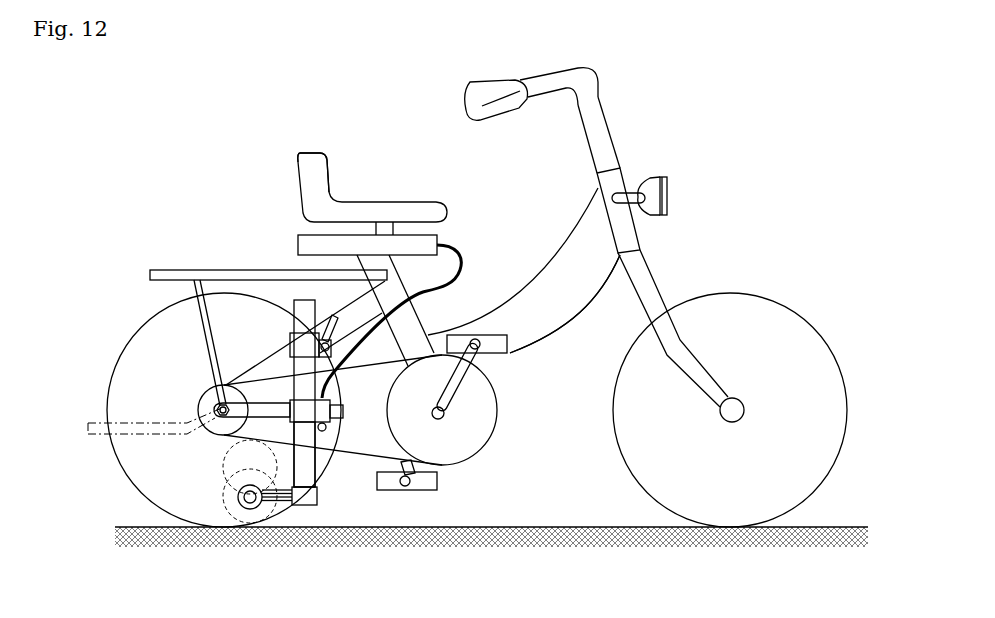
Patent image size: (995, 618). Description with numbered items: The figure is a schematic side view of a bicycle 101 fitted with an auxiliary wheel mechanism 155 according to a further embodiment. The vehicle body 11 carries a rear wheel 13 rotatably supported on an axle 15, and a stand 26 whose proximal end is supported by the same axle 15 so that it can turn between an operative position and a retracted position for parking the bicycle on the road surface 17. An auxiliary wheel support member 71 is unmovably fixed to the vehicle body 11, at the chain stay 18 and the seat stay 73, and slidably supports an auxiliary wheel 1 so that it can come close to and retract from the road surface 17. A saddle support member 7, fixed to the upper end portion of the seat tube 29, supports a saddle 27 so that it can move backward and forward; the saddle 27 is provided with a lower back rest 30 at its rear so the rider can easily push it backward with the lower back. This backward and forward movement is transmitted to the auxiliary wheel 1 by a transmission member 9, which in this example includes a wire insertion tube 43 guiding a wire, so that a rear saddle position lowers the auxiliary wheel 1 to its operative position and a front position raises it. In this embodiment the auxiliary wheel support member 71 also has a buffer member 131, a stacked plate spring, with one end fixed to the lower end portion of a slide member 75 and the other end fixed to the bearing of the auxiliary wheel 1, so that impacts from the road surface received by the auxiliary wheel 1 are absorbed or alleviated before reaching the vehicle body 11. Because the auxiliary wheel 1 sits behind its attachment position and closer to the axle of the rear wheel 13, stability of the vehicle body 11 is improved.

The auxiliary wheel 1 is at (244, 520).
The saddle support member 7 is at (358, 292).
The transmission member 9 is at (443, 282).
The vehicle body 11 is at (560, 267).
The rear wheel 13 is at (155, 312).
The axle 15 is at (233, 384).
The road surface 17 is at (490, 526).
The chain stay 18 is at (247, 402).
The stand 26 is at (88, 423).
The saddle 27 is at (397, 200).
The seat tube 29 is at (407, 240).
The lower back rest 30 is at (308, 160).
The wire insertion tube 43 is at (348, 418).
The auxiliary wheel support member 71 is at (279, 445).
The seat stay 73 is at (357, 255).
The slide member 75 is at (332, 470).
The bicycle 101 is at (538, 337).
The buffer member 131 is at (293, 505).
The auxiliary wheel mechanism 155 is at (299, 392).